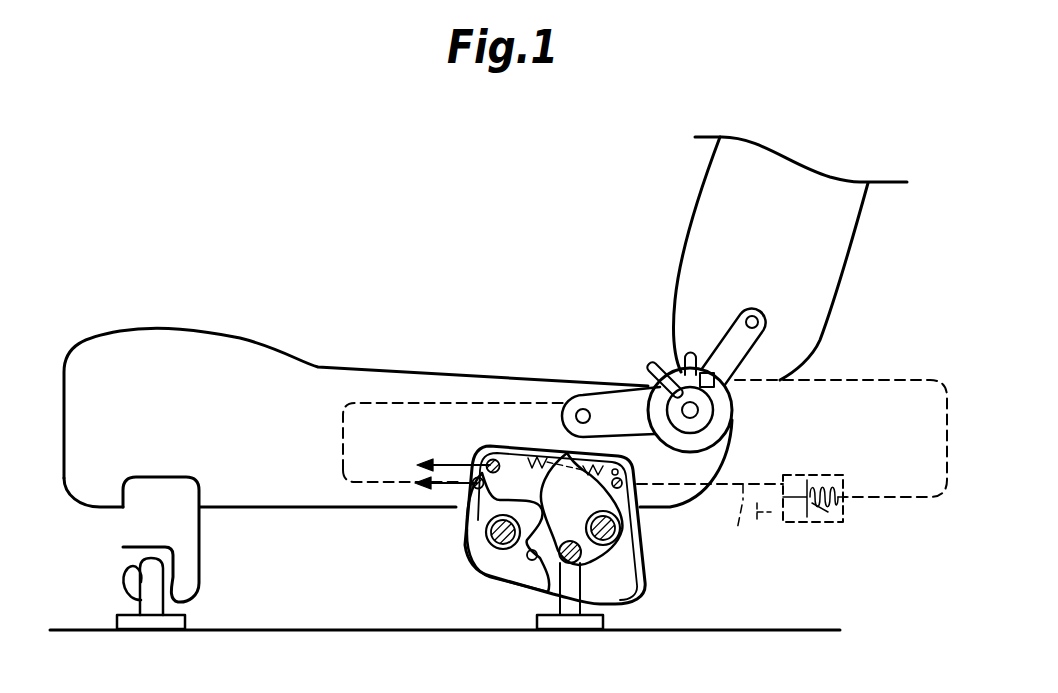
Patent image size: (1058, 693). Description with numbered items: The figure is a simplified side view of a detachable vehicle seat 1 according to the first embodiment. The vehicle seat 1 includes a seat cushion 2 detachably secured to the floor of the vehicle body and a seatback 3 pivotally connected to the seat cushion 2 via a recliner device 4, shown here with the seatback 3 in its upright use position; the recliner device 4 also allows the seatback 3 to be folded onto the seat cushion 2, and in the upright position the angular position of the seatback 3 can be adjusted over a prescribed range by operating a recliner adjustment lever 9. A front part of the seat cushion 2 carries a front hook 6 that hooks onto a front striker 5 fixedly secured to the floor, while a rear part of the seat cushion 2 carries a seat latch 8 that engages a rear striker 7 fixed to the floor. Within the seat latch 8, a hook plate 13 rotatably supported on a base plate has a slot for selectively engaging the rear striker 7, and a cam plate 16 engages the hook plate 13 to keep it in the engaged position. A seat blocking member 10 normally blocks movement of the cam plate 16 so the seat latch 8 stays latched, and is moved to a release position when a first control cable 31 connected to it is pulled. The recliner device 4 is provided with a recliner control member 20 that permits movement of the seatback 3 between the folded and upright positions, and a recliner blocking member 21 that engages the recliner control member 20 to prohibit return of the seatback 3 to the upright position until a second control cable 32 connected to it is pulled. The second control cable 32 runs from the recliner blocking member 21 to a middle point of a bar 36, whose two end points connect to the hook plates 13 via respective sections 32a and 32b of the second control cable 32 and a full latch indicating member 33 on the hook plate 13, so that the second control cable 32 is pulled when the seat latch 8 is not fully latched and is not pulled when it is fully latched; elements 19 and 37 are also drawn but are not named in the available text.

The vehicle seat 1 is at (470, 216).
The seat cushion 2 is at (328, 372).
The seatback 3 is at (705, 190).
The recliner device 4 is at (735, 433).
The front striker 5 is at (152, 610).
The front hook 6 is at (140, 530).
The rear striker 7 is at (550, 557).
The seat latch 8 is at (642, 574).
The recliner adjustment lever 9 is at (658, 366).
The seat blocking member 10 is at (468, 497).
The hook plate 13 is at (577, 585).
The cam plate 16 is at (472, 560).
The release cable 19 is at (452, 448).
The recliner control member 20 is at (690, 350).
The recliner blocking member 21 is at (733, 400).
The first control cable 31 is at (343, 445).
The second control cable 32 is at (825, 380).
The section of the second control cable 32a is at (735, 525).
The section of the second control cable 32b is at (771, 513).
The full latch indicating member 33 is at (625, 488).
The bar 36 is at (818, 486).
The motor 37 is at (833, 522).